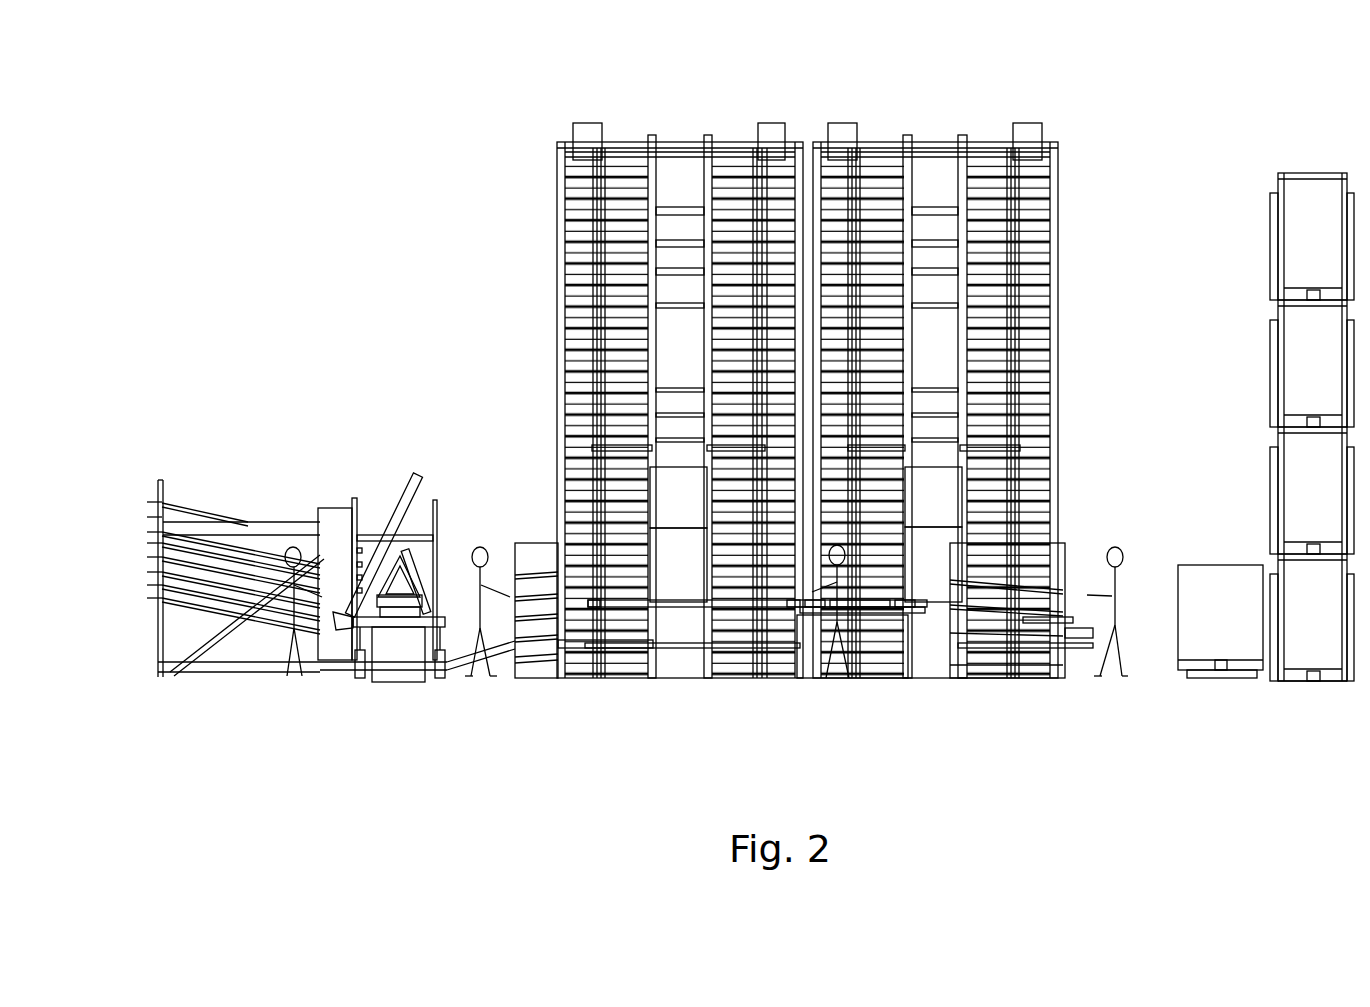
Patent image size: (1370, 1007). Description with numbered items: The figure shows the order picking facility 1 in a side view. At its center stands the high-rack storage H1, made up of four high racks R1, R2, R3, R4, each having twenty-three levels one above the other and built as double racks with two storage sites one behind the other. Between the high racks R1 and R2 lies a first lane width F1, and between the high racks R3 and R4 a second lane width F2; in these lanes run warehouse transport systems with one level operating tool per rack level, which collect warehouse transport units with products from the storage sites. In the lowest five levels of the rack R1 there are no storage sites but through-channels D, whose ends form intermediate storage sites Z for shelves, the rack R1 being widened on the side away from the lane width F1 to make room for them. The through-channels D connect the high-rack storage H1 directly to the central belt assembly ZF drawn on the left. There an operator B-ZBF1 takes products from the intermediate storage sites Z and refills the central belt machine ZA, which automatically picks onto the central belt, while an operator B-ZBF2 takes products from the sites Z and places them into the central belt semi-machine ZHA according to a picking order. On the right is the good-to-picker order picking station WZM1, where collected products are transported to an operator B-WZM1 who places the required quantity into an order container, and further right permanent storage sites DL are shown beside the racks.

The order picking facility 1 is at (318, 195).
The high-rack storage H1 is at (493, 192).
The high rack R1 is at (594, 118).
The high rack R2 is at (727, 120).
The high rack R3 is at (870, 120).
The high rack R4 is at (992, 120).
The first lane width F1 is at (675, 130).
The second lane width F2 is at (930, 130).
The through-channel D is at (575, 684).
The intermediate storage site Z is at (535, 540).
The central belt assembly ZF is at (388, 455).
The central belt machine ZA is at (413, 547).
The central belt semi-machine ZHA is at (350, 647).
The good-to-picker order picking station WZM1 is at (797, 683).
The operator B-WZM1 is at (1118, 548).
The operator B-ZBF1 is at (478, 672).
The operator B-ZBF2 is at (283, 672).
The permanent storage site DL is at (1195, 632).